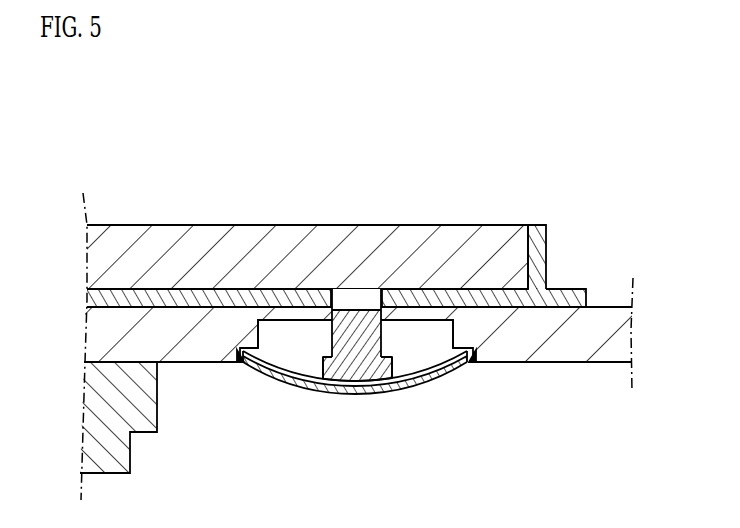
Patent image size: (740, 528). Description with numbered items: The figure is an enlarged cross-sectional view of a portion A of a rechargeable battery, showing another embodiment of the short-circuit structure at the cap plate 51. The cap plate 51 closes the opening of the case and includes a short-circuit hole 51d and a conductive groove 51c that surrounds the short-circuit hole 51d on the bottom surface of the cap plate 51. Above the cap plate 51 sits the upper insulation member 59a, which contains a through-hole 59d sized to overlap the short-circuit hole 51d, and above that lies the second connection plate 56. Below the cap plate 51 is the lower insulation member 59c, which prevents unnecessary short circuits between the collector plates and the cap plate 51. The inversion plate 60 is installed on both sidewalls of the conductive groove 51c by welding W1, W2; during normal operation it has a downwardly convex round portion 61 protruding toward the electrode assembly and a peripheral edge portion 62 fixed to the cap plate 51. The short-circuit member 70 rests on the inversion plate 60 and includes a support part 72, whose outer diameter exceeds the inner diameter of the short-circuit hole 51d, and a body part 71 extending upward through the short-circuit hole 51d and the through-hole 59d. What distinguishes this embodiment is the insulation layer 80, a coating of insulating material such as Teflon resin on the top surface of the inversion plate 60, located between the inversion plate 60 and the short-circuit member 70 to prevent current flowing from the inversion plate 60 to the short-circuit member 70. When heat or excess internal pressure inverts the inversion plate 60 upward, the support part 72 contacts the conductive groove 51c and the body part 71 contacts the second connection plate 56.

The cap plate 51 is at (555, 355).
The conductive groove 51c is at (252, 338).
The short-circuit hole 51d is at (302, 290).
The second connection plate 56 is at (142, 232).
The upper insulation member 59a is at (540, 225).
The lower insulation member 59c is at (148, 408).
The through-hole 59d is at (394, 289).
The inversion plate 60 is at (355, 430).
The downwardly convex round portion 61 is at (377, 395).
The peripheral edge portion 62 is at (463, 356).
The short-circuit member 70 is at (321, 433).
The body part 71 is at (290, 385).
The support part 72 is at (312, 393).
The insulation layer 80 is at (321, 399).
The welding W1 is at (237, 365).
The welding W2 is at (474, 362).
The portion 'A' A is at (488, 178).